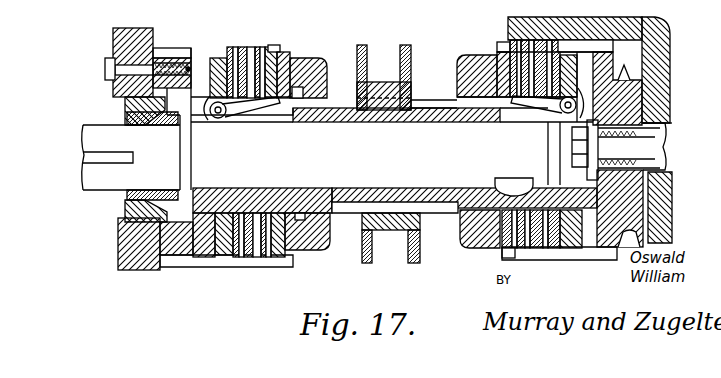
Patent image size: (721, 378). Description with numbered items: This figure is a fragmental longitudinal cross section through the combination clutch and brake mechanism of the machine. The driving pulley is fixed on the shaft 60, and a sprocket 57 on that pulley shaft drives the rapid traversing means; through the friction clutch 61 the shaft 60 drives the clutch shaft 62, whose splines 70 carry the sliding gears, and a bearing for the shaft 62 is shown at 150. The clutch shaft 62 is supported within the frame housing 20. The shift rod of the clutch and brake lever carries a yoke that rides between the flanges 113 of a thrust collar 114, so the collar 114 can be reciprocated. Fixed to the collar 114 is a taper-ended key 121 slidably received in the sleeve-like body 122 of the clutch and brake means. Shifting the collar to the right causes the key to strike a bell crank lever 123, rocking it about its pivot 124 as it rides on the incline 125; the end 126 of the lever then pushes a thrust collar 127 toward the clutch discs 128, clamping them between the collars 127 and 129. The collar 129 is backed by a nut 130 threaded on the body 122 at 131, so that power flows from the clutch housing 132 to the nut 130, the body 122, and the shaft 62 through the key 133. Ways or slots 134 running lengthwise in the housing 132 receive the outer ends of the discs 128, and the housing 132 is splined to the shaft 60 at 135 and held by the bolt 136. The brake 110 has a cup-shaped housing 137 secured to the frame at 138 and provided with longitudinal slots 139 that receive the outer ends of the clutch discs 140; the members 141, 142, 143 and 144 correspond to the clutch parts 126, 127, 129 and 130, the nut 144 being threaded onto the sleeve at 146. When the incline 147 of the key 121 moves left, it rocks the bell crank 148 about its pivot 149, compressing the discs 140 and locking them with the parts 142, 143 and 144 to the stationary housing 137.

The housing 20 is at (115, 32).
The sprocket 57 is at (650, 57).
The shaft 60 is at (658, 152).
The friction clutch 61 is at (578, 42).
The clutch shaft 62 is at (440, 162).
The spline 70 is at (92, 128).
The brake 110 is at (292, 58).
The flanges 113 is at (408, 264).
The thrust collar 114 is at (418, 248).
The taper-ended key 121 is at (420, 100).
The sleeve-like body 122 is at (420, 110).
The bell crank lever 123 is at (545, 105).
The pivot 124 is at (560, 108).
The tapered end or incline 125 is at (478, 100).
The end of bell crank lever 126 is at (625, 75).
The thrust collar 127 is at (596, 60).
The clutch discs 128 is at (512, 40).
The collar 129 is at (500, 52).
The nut 130 is at (460, 60).
The threaded engagement 131 is at (470, 100).
The clutch housing 132 is at (642, 90).
The key 133 is at (514, 180).
The ways or slots 134 is at (592, 30).
The spline 135 is at (670, 116).
The bolt 136 is at (572, 150).
The housing 137 is at (160, 62).
The bolt 138 is at (108, 68).
The longitudinal slots 139 is at (186, 48).
The clutch discs 140 is at (275, 47).
The bell crank end 141 is at (218, 60).
The thrust collar 142 is at (240, 47).
The collar 143 is at (300, 70).
The nut 144 is at (317, 56).
The screw thread 146 is at (328, 110).
The incline 147 is at (272, 100).
The bell crank 148 is at (260, 108).
The pivot 149 is at (218, 118).
The bearing 150 is at (127, 212).